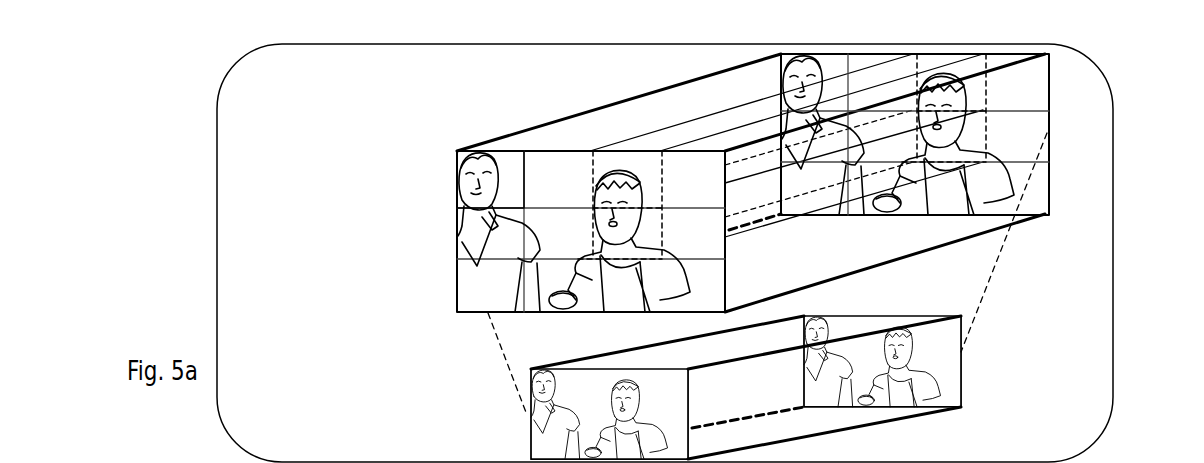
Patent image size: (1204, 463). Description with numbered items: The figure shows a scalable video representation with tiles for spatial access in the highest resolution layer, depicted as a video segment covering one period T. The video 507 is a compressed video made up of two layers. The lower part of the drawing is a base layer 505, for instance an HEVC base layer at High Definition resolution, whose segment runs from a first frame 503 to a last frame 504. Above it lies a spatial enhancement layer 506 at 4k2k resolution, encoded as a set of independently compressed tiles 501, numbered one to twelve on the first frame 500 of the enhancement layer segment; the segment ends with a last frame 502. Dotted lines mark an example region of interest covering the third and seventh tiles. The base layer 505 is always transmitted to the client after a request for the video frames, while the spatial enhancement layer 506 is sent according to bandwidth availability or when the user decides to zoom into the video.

The first frame of the enhancement layer segment 500 is at (457, 235).
The independently compressed tiles 501 is at (473, 150).
The last frame of the enhancement layer segment 502 is at (1046, 152).
The first frame of the base layer segment 503 is at (529, 416).
The last frame of the base layer segment 504 is at (962, 382).
The base layer 505 is at (439, 378).
The spatial enhancement layer 506 is at (386, 165).
The video 507 is at (322, 207).